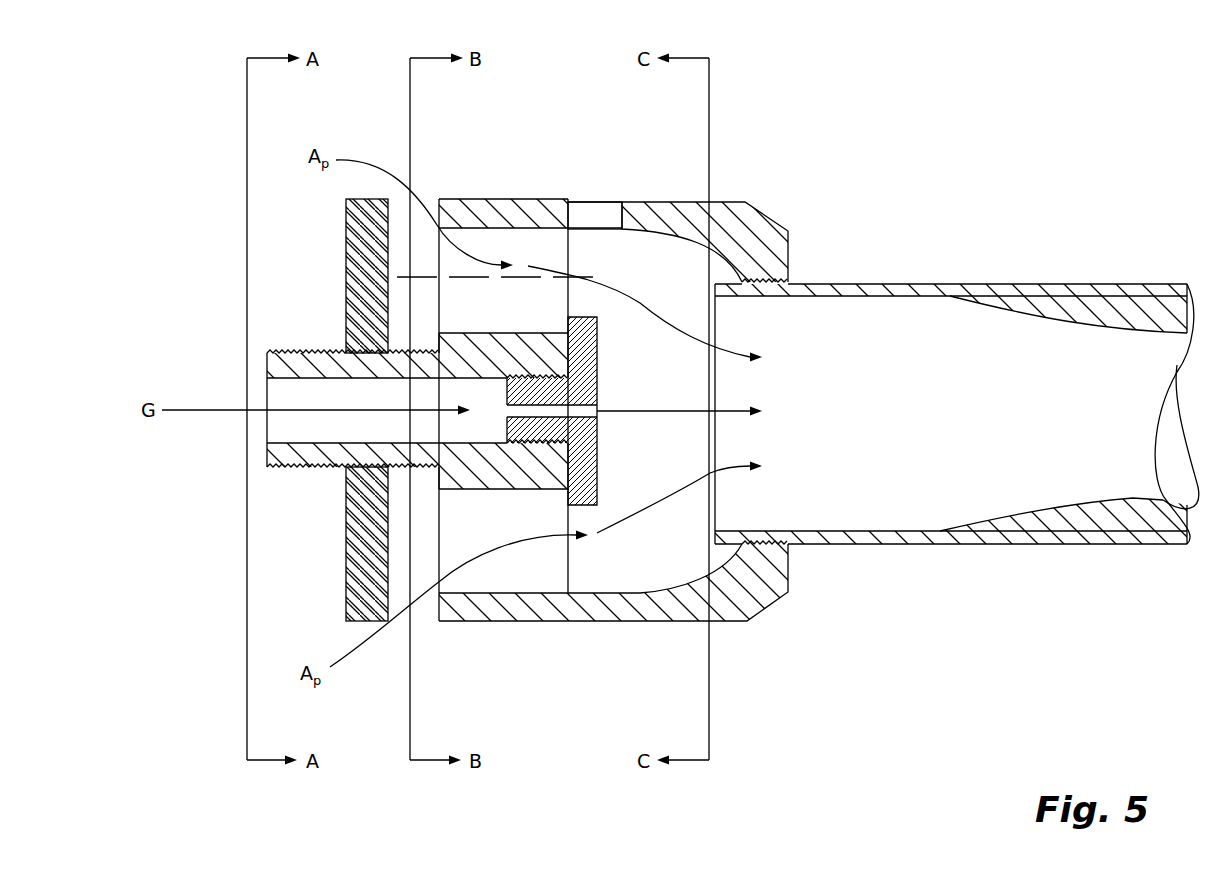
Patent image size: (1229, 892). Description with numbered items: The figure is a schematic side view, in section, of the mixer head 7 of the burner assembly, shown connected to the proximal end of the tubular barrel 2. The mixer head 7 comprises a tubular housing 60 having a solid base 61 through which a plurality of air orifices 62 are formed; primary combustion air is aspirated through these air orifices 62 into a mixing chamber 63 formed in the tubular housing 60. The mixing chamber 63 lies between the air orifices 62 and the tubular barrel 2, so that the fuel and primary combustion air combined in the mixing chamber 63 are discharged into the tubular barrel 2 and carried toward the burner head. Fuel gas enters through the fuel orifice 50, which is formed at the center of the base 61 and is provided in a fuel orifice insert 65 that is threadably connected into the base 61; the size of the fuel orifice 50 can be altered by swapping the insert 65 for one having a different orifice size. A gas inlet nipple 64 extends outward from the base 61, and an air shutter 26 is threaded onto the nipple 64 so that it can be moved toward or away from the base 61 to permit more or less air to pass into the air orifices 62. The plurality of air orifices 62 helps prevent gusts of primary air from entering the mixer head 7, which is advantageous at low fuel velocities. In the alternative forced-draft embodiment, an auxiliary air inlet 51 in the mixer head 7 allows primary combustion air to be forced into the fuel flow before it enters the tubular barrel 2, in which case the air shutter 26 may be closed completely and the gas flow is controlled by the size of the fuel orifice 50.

The tubular barrel 2 is at (966, 284).
The mixer head 7 is at (734, 202).
The air shutter 26 is at (344, 270).
The fuel orifice 50 is at (597, 418).
The auxiliary air inlet 51 is at (571, 213).
The tubular housing 60 is at (535, 622).
The base 61 is at (505, 347).
The air orifices 62 is at (441, 199).
The mixing chamber 63 is at (688, 404).
The gas inlet nipple 64 is at (313, 467).
The fuel orifice insert 65 is at (597, 330).